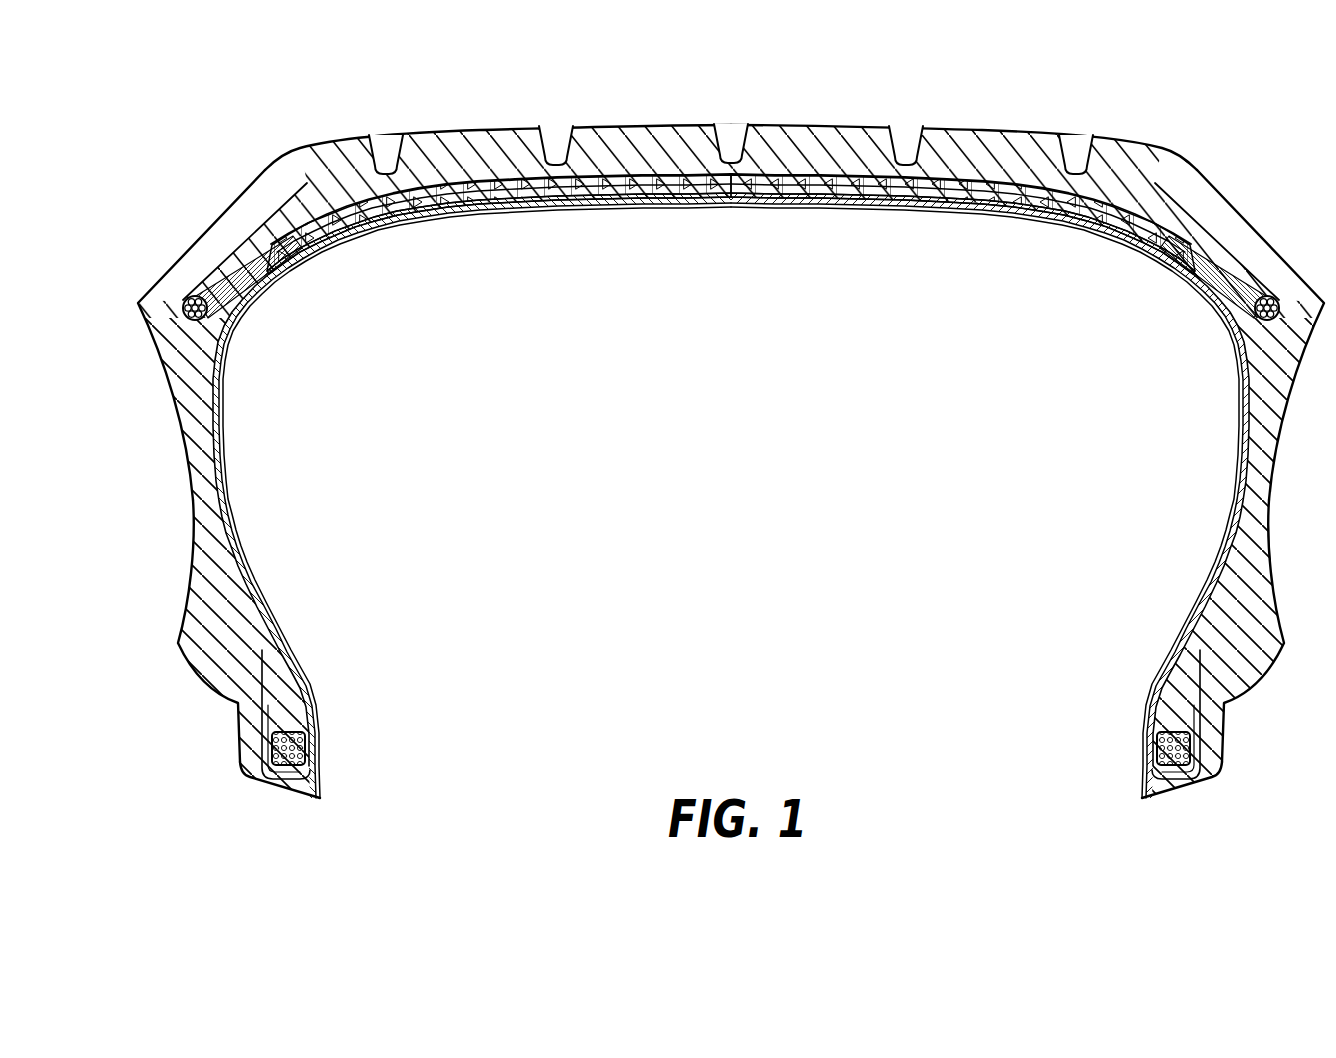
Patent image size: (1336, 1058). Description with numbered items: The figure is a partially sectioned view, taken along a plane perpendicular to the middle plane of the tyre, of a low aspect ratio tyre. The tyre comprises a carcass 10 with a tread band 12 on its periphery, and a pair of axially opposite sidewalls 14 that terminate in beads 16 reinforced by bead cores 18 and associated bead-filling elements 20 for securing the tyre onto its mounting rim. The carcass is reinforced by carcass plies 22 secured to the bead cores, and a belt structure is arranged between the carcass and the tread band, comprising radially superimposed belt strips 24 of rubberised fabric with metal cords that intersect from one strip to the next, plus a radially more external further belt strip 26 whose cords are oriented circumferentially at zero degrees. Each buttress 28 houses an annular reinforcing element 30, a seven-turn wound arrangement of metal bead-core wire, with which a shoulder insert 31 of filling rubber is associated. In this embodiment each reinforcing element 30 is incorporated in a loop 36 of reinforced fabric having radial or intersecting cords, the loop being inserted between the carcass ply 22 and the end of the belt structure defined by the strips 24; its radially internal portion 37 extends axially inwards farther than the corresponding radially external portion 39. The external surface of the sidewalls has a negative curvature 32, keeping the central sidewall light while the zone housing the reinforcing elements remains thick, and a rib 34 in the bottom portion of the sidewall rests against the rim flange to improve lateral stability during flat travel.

The carcass 10 is at (731, 203).
The tread band 12 is at (783, 133).
The sidewalls 14 is at (190, 437).
The beads 16 is at (240, 747).
The bead cores 18 is at (310, 745).
The bead-filling elements 20 is at (285, 693).
The carcass plies 22 is at (633, 177).
The belt strips 24 is at (473, 200).
The further belt strip 26 is at (494, 177).
The buttress 28 is at (175, 330).
The annular reinforcing element 30 is at (163, 295).
The shoulder insert 31 is at (230, 293).
The negative curvature of the external surface of the sidewalls 32 is at (187, 487).
The rib 34 is at (297, 790).
The loop 36 is at (217, 213).
The radially internal portion 37 is at (410, 220).
The radially external portion 39 is at (262, 222).